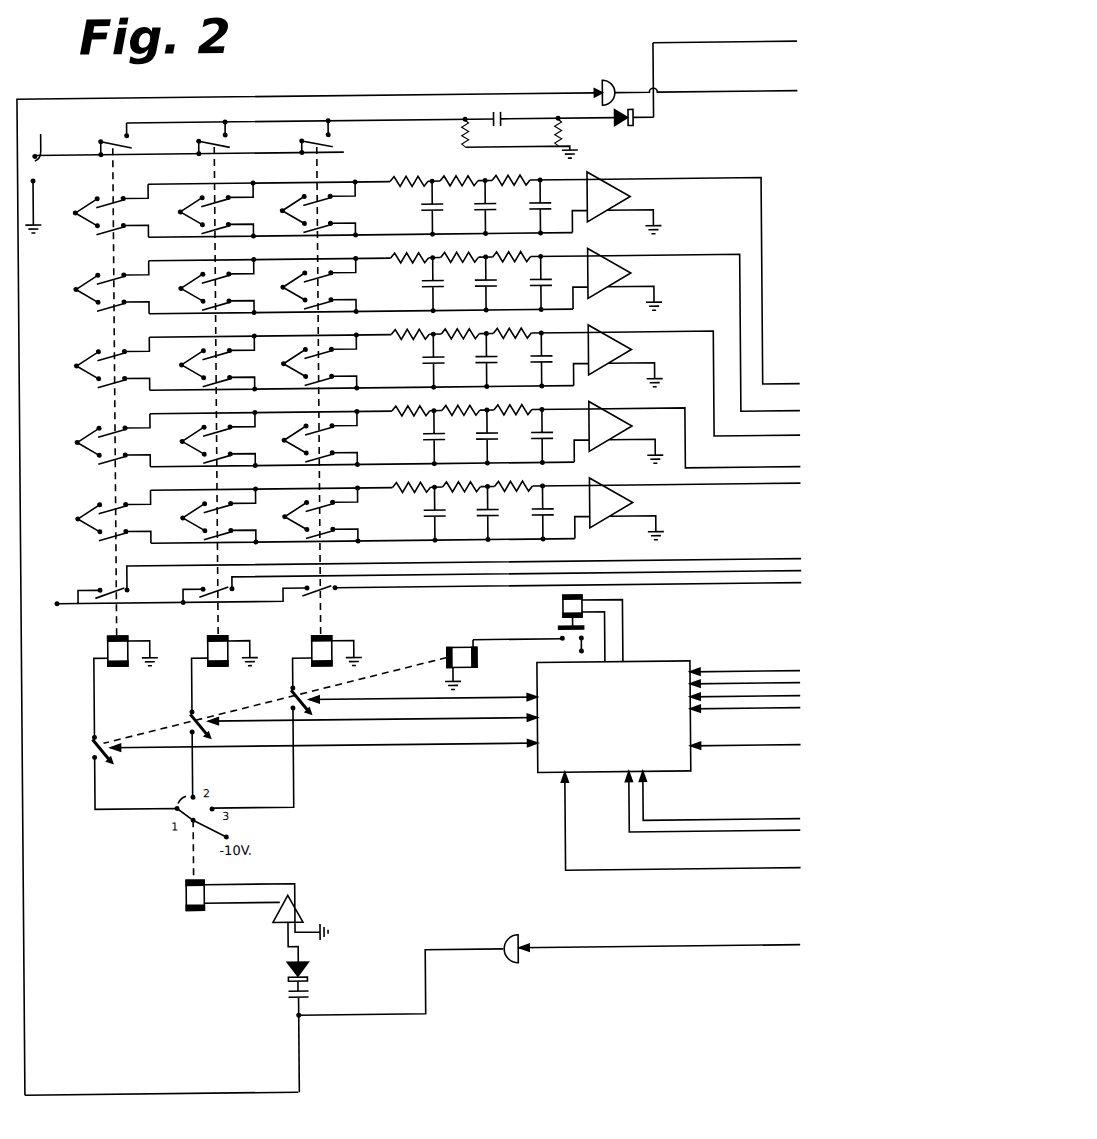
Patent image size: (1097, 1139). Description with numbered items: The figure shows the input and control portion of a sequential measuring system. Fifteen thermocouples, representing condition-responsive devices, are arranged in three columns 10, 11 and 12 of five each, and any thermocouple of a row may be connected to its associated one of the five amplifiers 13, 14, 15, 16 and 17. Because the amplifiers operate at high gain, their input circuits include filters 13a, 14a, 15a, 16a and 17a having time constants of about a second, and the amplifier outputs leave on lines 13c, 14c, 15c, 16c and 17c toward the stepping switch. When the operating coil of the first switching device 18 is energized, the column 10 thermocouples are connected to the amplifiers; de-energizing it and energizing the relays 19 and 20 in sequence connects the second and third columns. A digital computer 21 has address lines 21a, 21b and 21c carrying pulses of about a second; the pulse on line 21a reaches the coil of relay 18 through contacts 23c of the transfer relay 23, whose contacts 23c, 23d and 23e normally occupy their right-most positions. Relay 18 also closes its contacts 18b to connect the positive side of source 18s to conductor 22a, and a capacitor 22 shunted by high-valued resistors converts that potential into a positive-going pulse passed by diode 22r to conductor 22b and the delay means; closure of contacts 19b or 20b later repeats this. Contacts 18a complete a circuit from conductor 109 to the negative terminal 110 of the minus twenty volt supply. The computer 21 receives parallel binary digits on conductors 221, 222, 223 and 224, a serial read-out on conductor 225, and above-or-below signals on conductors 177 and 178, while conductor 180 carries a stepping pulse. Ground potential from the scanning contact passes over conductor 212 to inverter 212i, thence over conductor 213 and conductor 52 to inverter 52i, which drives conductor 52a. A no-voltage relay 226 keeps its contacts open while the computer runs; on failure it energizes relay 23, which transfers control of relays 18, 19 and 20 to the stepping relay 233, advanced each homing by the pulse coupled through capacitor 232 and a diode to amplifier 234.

The first column of thermocouples 10 is at (80, 184).
The second column of thermocouples 11 is at (203, 176).
The third column of thermocouples 12 is at (308, 177).
The amplifier 13 is at (599, 178).
The amplifier 14 is at (595, 254).
The amplifier 15 is at (599, 330).
The amplifier 16 is at (595, 404).
The amplifier 17 is at (595, 479).
The filter 13a is at (520, 176).
The filter 14a is at (507, 258).
The filter 15a is at (507, 333).
The filter 16a is at (507, 411).
The filter 17a is at (507, 486).
The amplifier output line 13c is at (696, 184).
The amplifier output line 14c is at (690, 262).
The amplifier output line 15c is at (748, 443).
The amplifier output line 16c is at (708, 471).
The amplifier output line 17c is at (736, 492).
The first switching device 18 is at (104, 648).
The relay 19 is at (204, 650).
The relay 20 is at (308, 651).
The contacts of relay 18 18a is at (129, 586).
The contacts of relay 18 18b is at (115, 140).
The contacts of relay 19 19b is at (205, 139).
The contacts of relay 20 20b is at (333, 146).
The source 18s is at (44, 141).
The digital computer 21 is at (650, 664).
The output or address line 21a is at (411, 748).
The address line 21b is at (468, 722).
The address line 21c is at (493, 698).
The capacitor 22 is at (504, 125).
The conductor 22a is at (263, 122).
The conductor 22b is at (686, 44).
The diode 22r is at (634, 130).
The transfer relay 23 is at (451, 648).
The contacts of relay 23 23c is at (101, 735).
The contacts of relay 23 23d is at (194, 715).
The contacts of relay 23 23e is at (296, 692).
The conductor 52 is at (340, 95).
The conductor 52a is at (740, 97).
The inverter 52i is at (605, 86).
The conductor 109 is at (723, 563).
The negative terminal 110 is at (55, 597).
The conductor 177 is at (712, 835).
The conductor 178 is at (712, 823).
The conductor 180 is at (741, 748).
The conductor 212 is at (660, 950).
The inverter 212i is at (511, 938).
The conductor 213 is at (355, 1014).
The conductor 221 is at (700, 673).
The conductor 222 is at (716, 685).
The conductor 223 is at (730, 698).
The conductor 224 is at (746, 710).
The conductor 225 is at (560, 810).
The no-voltage relay 226 is at (560, 609).
The capacitor 232 is at (308, 999).
The stepping relay 233 is at (181, 902).
The amplifier 234 is at (298, 902).